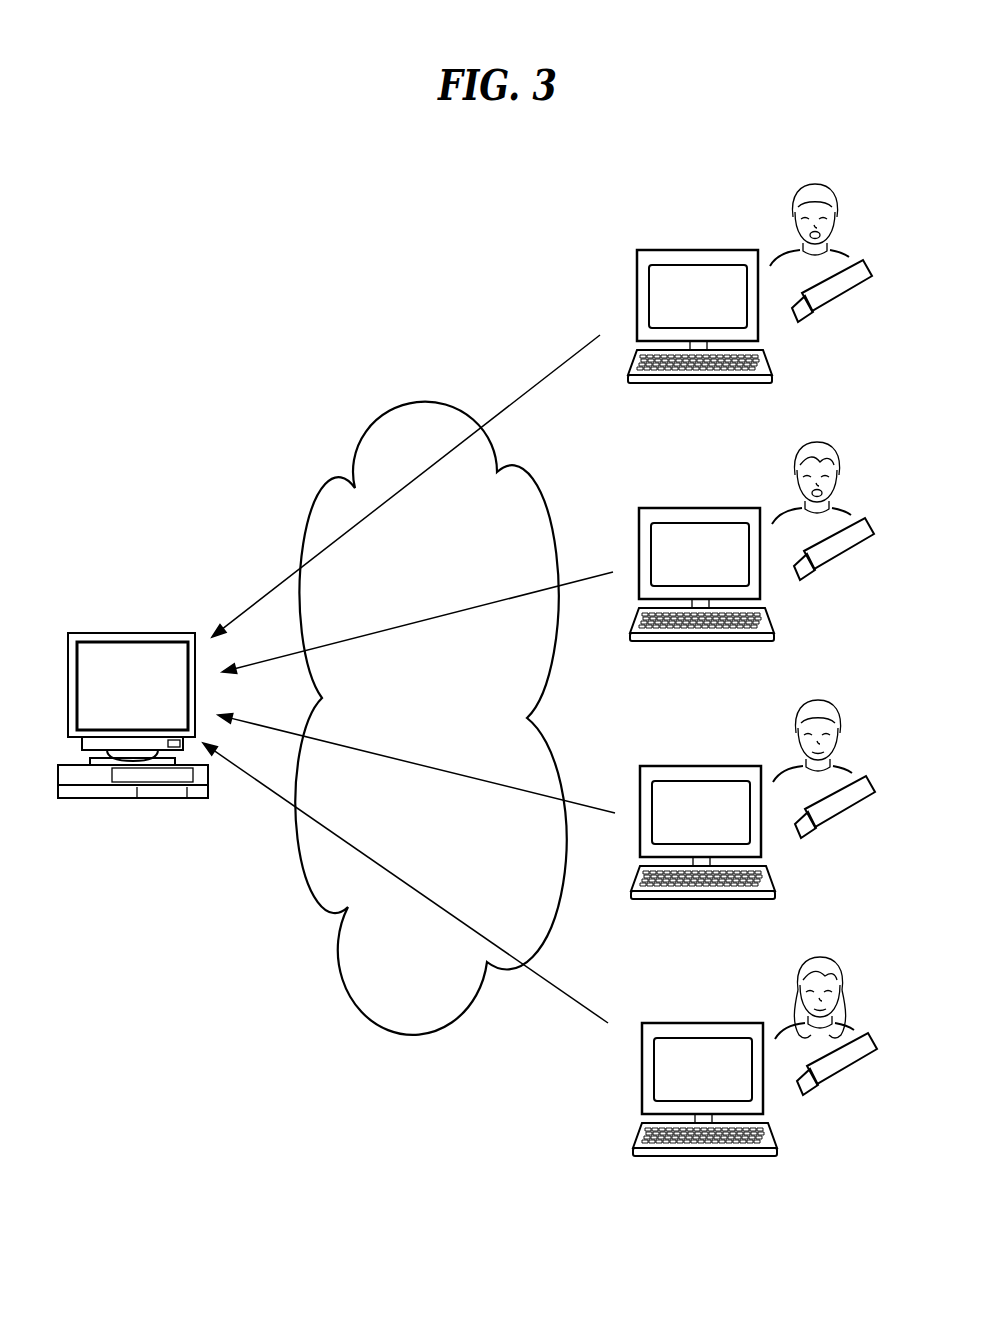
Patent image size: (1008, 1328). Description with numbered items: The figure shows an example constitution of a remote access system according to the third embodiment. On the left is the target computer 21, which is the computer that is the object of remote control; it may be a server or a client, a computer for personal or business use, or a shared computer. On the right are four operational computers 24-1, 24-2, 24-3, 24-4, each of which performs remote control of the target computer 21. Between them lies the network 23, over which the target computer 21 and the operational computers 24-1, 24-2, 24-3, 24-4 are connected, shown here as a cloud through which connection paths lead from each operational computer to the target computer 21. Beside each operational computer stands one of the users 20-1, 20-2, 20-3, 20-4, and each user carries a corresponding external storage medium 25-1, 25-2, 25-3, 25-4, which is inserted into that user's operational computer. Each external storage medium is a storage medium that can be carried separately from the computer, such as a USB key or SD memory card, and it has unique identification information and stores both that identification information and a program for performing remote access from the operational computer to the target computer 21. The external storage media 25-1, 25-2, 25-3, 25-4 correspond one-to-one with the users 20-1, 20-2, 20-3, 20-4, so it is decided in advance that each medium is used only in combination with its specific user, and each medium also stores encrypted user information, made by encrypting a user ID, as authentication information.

The user 20-1 is at (818, 186).
The user 20-2 is at (820, 463).
The user 20-3 is at (821, 721).
The user 20-4 is at (823, 978).
The target computer 21 is at (117, 798).
The network 23 is at (385, 392).
The operational computer 24-1 is at (663, 385).
The operational computer 24-2 is at (702, 602).
The operational computer 24-3 is at (703, 860).
The operational computer 24-4 is at (705, 1117).
The external storage medium 25-1 is at (845, 300).
The external storage medium 25-2 is at (839, 565).
The external storage medium 25-3 is at (840, 823).
The external storage medium 25-4 is at (842, 1080).